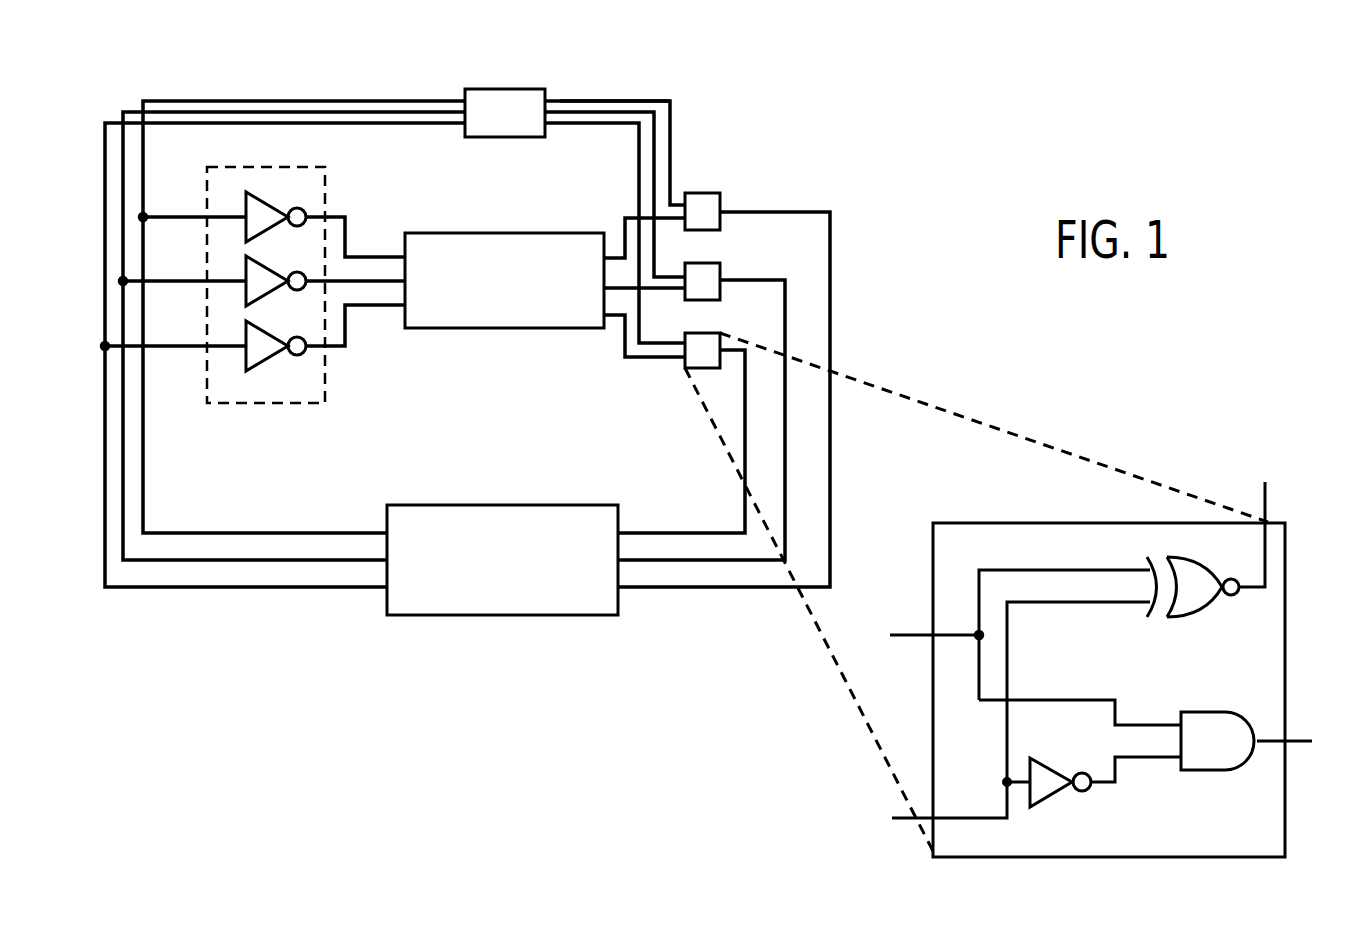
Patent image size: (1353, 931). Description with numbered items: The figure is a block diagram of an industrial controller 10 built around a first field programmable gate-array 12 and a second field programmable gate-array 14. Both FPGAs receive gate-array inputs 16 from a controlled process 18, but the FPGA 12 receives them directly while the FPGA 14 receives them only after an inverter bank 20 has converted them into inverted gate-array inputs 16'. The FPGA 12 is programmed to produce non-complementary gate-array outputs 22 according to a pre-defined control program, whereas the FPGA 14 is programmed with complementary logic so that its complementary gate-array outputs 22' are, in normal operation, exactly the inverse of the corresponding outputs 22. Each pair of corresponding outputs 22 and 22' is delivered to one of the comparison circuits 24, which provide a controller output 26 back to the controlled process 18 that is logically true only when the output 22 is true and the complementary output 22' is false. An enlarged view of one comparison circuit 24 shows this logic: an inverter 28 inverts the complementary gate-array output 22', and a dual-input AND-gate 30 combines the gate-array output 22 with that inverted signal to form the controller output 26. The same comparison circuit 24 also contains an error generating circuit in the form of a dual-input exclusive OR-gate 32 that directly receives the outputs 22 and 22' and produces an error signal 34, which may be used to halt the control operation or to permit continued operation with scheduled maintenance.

The industrial controller 10 is at (715, 112).
The first field programmable gate-array 12 is at (487, 89).
The second field programmable gate-array 14 is at (515, 233).
The gate-array inputs 16 is at (355, 330).
The inverted gate-array inputs 16' is at (357, 317).
The controlled process 18 is at (498, 615).
The inverter bank 20 is at (252, 403).
The non-complementary gate-array outputs 22 is at (855, 384).
The complementary gate-array outputs 22' is at (868, 518).
The comparison circuit 24 is at (722, 270).
The controller output 26 is at (785, 343).
The inverter 28 is at (1052, 790).
The dual-input AND-gate 30 is at (1212, 772).
The dual-input exclusive OR-gate 32 is at (1180, 553).
The error signal 34 is at (1268, 500).